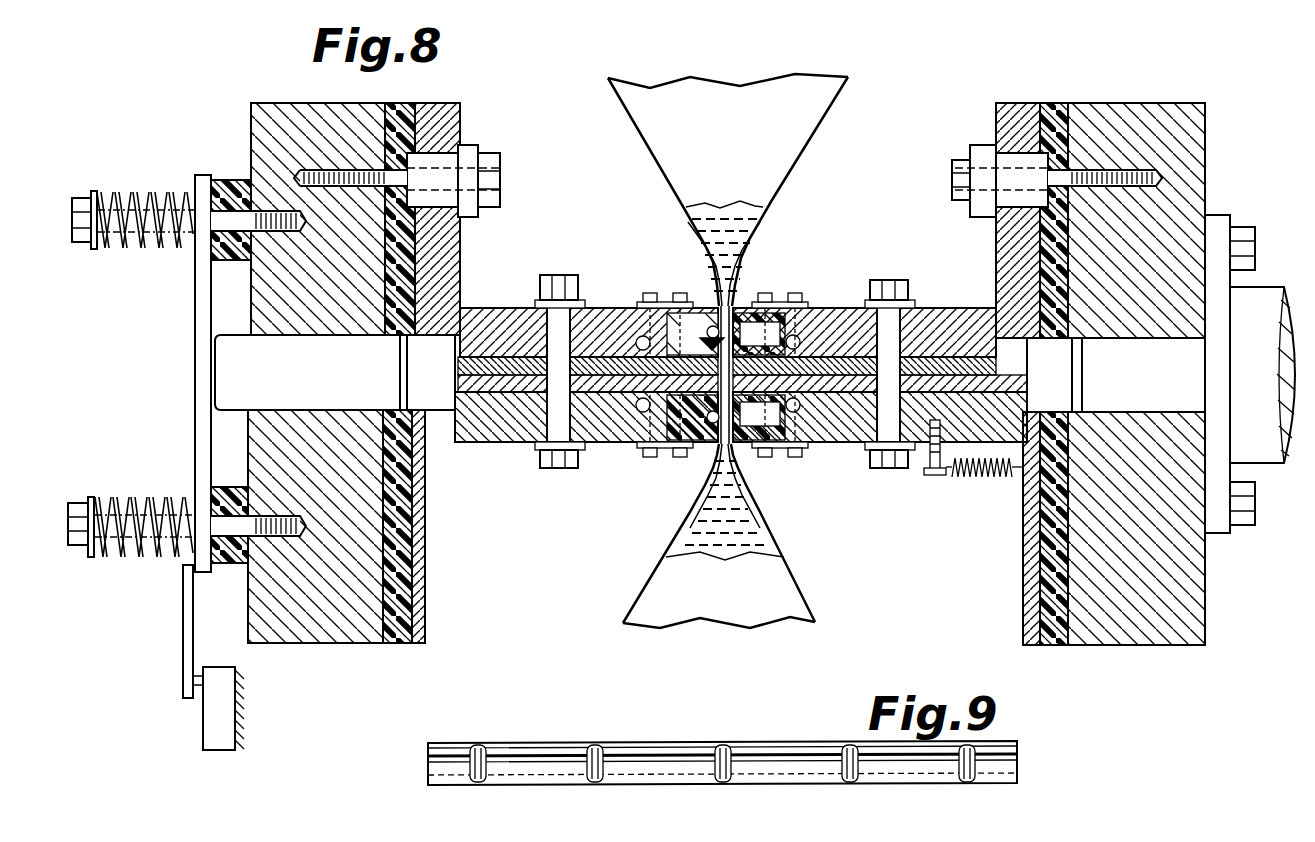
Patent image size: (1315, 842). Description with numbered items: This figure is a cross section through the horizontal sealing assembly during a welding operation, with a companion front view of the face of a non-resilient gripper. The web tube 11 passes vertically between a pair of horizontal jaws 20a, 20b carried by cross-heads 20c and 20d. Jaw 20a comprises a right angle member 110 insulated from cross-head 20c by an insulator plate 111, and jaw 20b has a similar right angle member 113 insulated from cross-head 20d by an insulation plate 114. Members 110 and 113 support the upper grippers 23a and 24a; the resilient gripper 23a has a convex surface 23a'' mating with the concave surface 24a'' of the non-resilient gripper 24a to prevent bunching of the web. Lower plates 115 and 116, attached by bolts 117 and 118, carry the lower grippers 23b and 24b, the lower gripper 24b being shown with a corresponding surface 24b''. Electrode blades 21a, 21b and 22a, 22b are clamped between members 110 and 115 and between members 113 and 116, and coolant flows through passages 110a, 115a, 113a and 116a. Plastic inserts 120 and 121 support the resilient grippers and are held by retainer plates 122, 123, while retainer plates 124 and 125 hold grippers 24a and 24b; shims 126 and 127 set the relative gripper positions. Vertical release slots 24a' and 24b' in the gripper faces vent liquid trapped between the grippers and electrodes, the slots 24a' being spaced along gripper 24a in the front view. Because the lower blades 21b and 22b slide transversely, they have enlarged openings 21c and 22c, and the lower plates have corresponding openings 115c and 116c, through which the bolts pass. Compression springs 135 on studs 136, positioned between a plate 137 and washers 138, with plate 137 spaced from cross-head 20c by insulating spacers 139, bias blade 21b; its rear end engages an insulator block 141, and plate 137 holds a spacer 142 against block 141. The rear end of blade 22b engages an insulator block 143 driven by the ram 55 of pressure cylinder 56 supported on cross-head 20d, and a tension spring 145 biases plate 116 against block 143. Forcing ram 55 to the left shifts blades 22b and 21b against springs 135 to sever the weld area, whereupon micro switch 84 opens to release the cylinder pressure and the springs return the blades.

In FIG. 8, the tube 11 is at (798, 598).
In FIG. 8, the horizontal jaw 20a is at (595, 252).
In FIG. 8, the horizontal jaw 20b is at (886, 247).
In FIG. 8, the cross-head 20c is at (293, 110).
In FIG. 8, the cross-head 20d is at (1152, 106).
In FIG. 8, the upper electrode blade 21a is at (662, 373).
In FIG. 8, the lower electrode blade 21b is at (700, 391).
In FIG. 8, the enlarged opening 21c is at (578, 384).
In FIG. 8, the upper electrode blade 22a is at (789, 373).
In FIG. 8, the lower electrode blade 22b is at (796, 391).
In FIG. 8, the enlarged opening 22c is at (910, 384).
In FIG. 8, the resilient gripper 23a is at (703, 309).
In FIG. 8, the convex surface 23a'' is at (692, 366).
In FIG. 8, the resilient gripper 23b is at (706, 445).
In FIG. 8, the non-resilient gripper 24a is at (759, 292).
In FIG. 9, the non-resilient gripper 24a is at (722, 739).
In FIG. 8, the release slot 24a' is at (759, 274).
In FIG. 9, the release slot 24a' is at (751, 739).
In FIG. 8, the concave surface 24a'' is at (759, 334).
In FIG. 9, the concave surface 24a'' is at (749, 761).
In FIG. 8, the non-resilient gripper 24b is at (773, 474).
In FIG. 8, the release slot 24b' is at (789, 508).
In FIG. 8, the lower jaw groove 24b'' is at (759, 417).
In FIG. 8, the piston 55 is at (1153, 369).
In FIG. 8, the pressure cylinder 56 is at (1272, 460).
In FIG. 8, the micro switch 84 is at (236, 706).
In FIG. 8, the right angle member 110 is at (462, 118).
In FIG. 8, the flow passage 110a is at (640, 336).
In FIG. 8, the insulator plate 111 is at (400, 104).
In FIG. 8, the right angle member 113 is at (996, 116).
In FIG. 8, the flow passage 113a is at (797, 336).
In FIG. 8, the electrical insulation plate 114 is at (1054, 104).
In FIG. 8, the lower plate 115 is at (512, 444).
In FIG. 8, the flow passage 115a is at (637, 411).
In FIG. 8, the enlarged opening 115c is at (578, 404).
In FIG. 8, the lower plate 116 is at (843, 450).
In FIG. 8, the flow passage 116a is at (800, 405).
In FIG. 8, the enlarged opening 116c is at (908, 404).
In FIG. 8, the bolt 117 is at (548, 328).
In FIG. 8, the bolt 118 is at (890, 281).
In FIG. 8, the insert 120 is at (700, 348).
In FIG. 8, the insert 121 is at (668, 452).
In FIG. 8, the retainer plate 122 is at (648, 296).
In FIG. 8, the retainer plate 123 is at (650, 457).
In FIG. 8, the retainer plate 124 is at (792, 298).
In FIG. 8, the retainer plate 125 is at (742, 443).
In FIG. 8, the shim 126 is at (709, 327).
In FIG. 8, the shim 127 is at (781, 295).
In FIG. 8, the compression spring 135 is at (152, 192).
In FIG. 8, the stud 136 is at (82, 198).
In FIG. 8, the plate 137 is at (195, 299).
In FIG. 8, the washer 138 is at (94, 250).
In FIG. 8, the spacer 139 is at (222, 180).
In FIG. 8, the insulator block 141 is at (445, 369).
In FIG. 8, the spacer 142 is at (215, 359).
In FIG. 8, the insulator block 143 is at (1064, 369).
In FIG. 8, the tension spring 145 is at (992, 478).